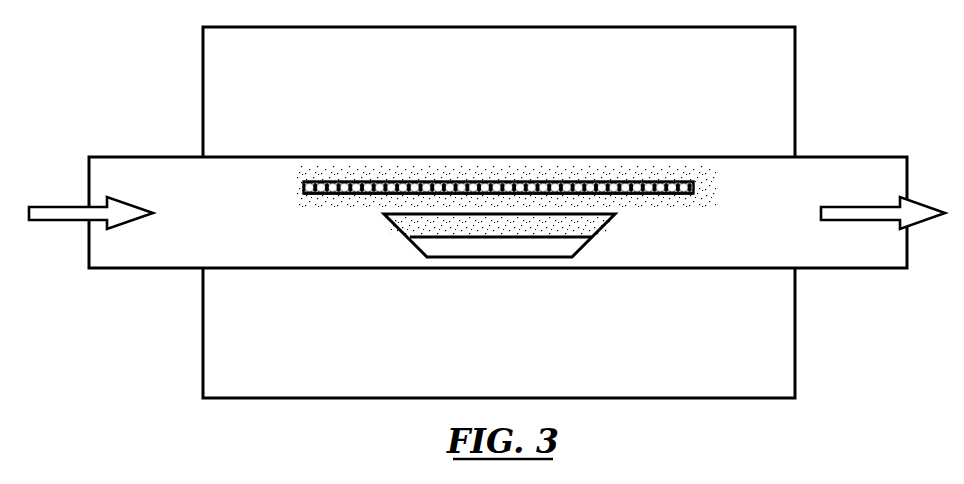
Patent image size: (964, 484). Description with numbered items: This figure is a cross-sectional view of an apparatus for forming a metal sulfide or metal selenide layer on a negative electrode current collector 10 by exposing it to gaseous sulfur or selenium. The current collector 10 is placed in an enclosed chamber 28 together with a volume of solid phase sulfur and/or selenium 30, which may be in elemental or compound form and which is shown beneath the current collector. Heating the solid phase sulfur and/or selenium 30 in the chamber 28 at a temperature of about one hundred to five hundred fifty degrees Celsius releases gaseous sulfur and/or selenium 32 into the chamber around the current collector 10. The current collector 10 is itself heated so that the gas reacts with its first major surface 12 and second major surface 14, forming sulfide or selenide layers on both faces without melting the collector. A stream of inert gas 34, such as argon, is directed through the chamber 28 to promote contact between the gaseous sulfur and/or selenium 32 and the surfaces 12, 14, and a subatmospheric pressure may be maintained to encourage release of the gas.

The negative electrode current collector 10 is at (694, 187).
The first major surface 12 is at (660, 182).
The second major surface 14 is at (660, 194).
The enclosed chamber 28 is at (322, 157).
The solid phase sulfur and/or selenium 30 is at (571, 246).
The gaseous sulfur and/or selenium 32 is at (378, 206).
The stream of inert gas 34 is at (54, 222).